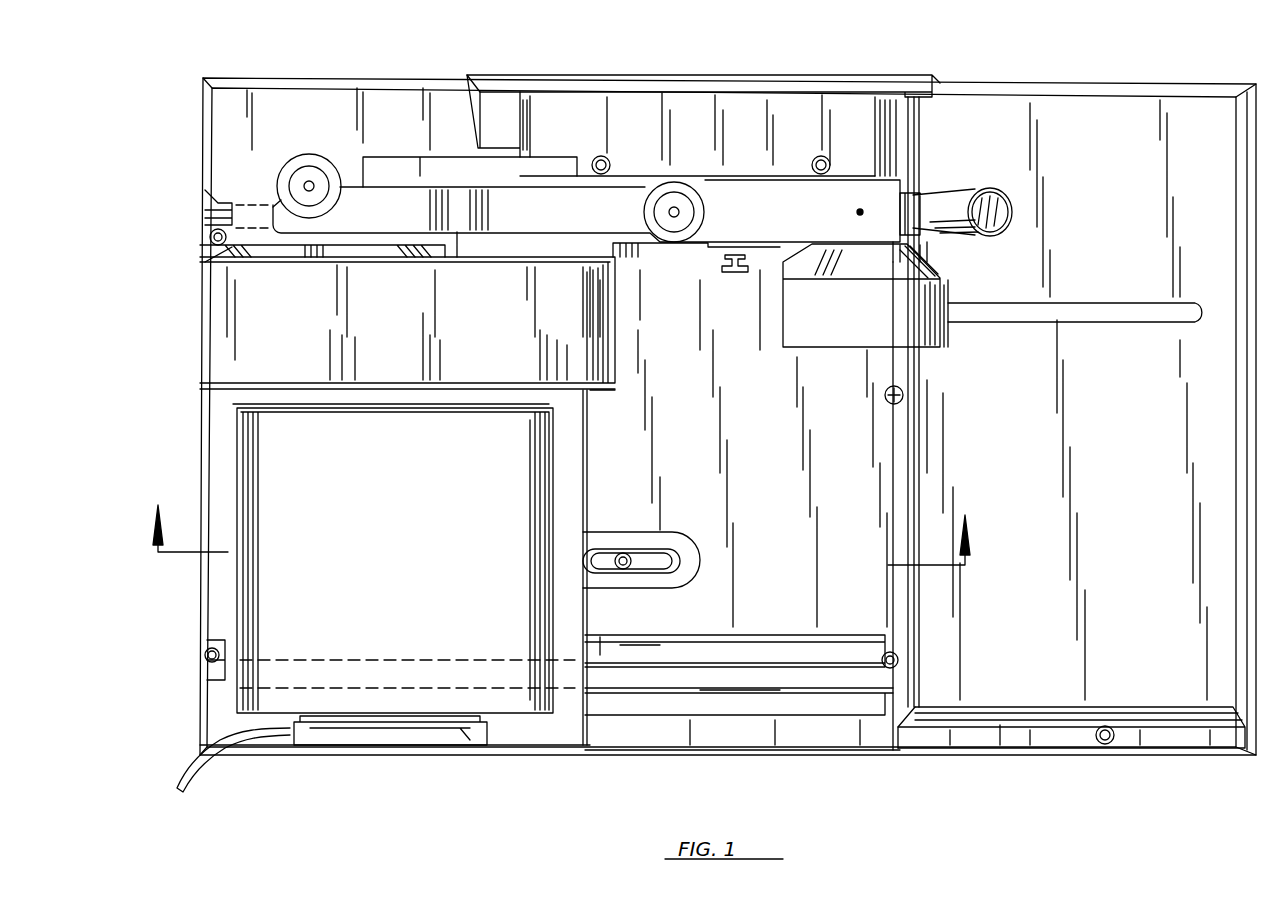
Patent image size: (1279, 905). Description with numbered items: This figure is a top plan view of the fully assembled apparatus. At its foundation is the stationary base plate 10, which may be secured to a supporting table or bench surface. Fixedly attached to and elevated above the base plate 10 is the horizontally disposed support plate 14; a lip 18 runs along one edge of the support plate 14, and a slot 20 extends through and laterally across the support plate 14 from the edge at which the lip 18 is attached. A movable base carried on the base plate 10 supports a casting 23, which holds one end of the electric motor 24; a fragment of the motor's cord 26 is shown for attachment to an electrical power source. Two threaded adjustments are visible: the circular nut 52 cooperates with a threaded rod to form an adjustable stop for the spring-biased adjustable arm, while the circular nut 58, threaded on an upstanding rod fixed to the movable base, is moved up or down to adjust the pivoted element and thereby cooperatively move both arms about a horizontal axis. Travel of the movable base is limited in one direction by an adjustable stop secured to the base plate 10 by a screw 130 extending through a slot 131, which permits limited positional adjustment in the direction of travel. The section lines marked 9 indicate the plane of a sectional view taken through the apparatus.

The section line 9- 9 is at (559, 535).
The base plate 10 is at (667, 742).
The support plate 14 is at (1083, 107).
The lip 18 is at (915, 440).
The slot 20 is at (1112, 322).
The casting 23 is at (418, 733).
The electric motor 24 is at (343, 545).
The cord 26 is at (212, 760).
The circular nut 52 is at (704, 214).
The circular nut 58 is at (318, 158).
The screw 130 is at (672, 537).
The slot 131 is at (653, 570).